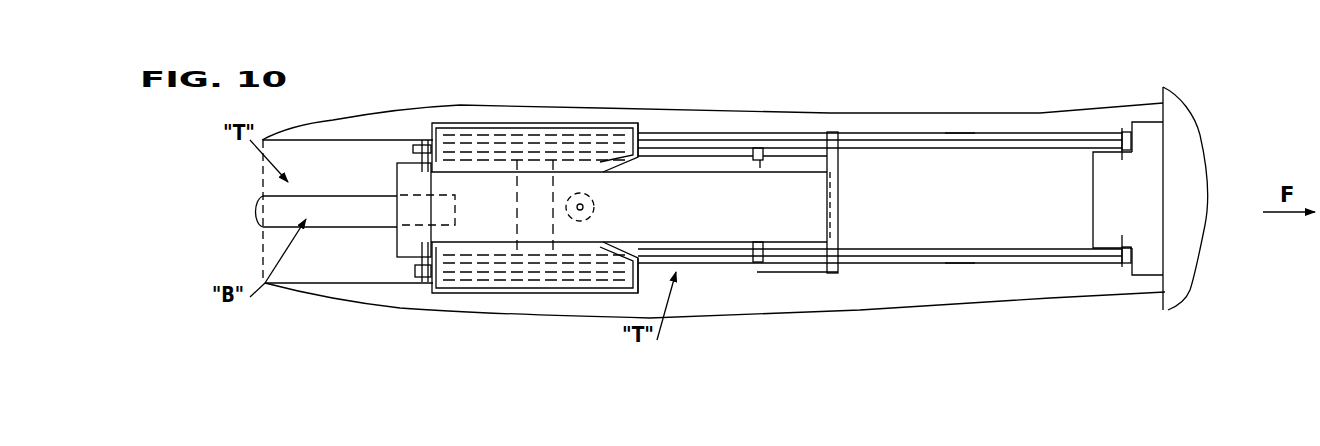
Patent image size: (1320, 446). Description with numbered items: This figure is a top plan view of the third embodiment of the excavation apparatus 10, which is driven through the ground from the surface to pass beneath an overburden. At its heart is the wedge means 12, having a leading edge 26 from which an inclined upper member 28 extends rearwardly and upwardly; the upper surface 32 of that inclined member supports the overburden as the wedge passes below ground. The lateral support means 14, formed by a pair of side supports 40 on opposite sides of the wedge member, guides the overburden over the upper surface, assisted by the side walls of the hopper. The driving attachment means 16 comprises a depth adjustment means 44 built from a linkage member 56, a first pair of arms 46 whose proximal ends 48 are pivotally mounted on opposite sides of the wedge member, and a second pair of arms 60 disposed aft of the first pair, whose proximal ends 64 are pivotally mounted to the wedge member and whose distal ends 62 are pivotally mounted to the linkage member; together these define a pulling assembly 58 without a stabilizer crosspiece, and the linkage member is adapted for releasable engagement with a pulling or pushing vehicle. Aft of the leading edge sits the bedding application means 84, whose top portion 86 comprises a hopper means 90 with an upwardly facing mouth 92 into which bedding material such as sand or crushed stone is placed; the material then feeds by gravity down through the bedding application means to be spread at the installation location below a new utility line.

The excavation apparatus 10 is at (646, 67).
The wedge means 12 is at (757, 270).
The lateral support means 14 is at (386, 168).
The driving attachment means 16 is at (1111, 92).
The leading edge 26 is at (839, 210).
The inclined upper member 28 is at (820, 190).
The upper surface 32 is at (710, 183).
The side supports 40 is at (696, 152).
The depth adjustment means 44 is at (1093, 126).
The first pair of arms 46 is at (963, 252).
The proximal ends 48 is at (760, 155).
The linkage member 56 is at (1155, 187).
The pulling assembly 58 is at (1152, 93).
The second pair of arms 60 is at (917, 150).
The distal ends 62 is at (1122, 150).
The proximal ends 64 is at (423, 150).
The bedding application means 84 is at (452, 120).
The top portion 86 is at (533, 128).
The hopper means 90 is at (643, 121).
The upwardly facing mouth 92 is at (493, 133).